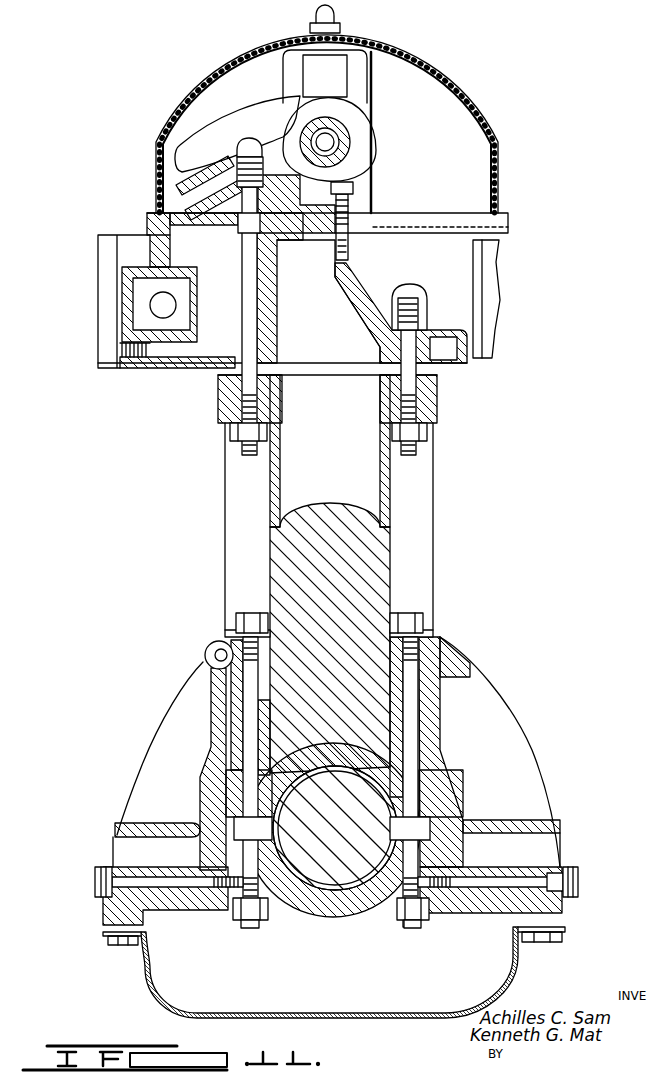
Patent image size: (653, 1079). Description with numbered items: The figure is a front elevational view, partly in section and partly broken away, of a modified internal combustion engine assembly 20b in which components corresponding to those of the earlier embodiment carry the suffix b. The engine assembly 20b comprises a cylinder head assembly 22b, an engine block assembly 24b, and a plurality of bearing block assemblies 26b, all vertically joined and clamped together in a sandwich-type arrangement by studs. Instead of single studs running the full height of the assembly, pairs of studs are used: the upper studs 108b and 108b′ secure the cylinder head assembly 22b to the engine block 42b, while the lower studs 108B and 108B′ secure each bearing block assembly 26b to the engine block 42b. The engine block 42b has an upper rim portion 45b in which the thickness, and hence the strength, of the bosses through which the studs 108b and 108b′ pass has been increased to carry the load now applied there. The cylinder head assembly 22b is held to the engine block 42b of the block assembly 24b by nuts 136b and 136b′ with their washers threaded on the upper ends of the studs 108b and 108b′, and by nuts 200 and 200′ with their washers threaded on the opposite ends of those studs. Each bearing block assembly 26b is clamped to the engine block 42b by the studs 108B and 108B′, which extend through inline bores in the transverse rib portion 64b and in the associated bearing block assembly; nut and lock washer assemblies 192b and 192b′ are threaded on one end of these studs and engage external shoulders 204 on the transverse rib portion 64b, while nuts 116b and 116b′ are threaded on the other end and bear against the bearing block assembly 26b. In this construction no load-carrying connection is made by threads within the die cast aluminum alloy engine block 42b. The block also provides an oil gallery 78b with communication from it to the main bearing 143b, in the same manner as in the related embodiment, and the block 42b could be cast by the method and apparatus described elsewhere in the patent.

The nut 136b is at (247, 143).
The nut 136b′ is at (423, 271).
The cylinder head assembly 22b is at (481, 291).
The upper rim portion 45b is at (217, 382).
The stud 108b is at (240, 392).
The stud 108b′ is at (440, 390).
The nut 200 is at (234, 441).
The nut 200′ is at (392, 441).
The internal combustion engine assembly 20b is at (438, 456).
The engine block assembly 24b is at (434, 490).
The engine block 42b is at (271, 550).
The nut and lock washer assembly 192b is at (236, 630).
The nut and lock washer assembly 192b′ is at (428, 622).
The external shoulders 204 is at (232, 640).
The transverse rib portion 64b is at (430, 648).
The oil gallery 78b is at (210, 650).
The stud 108B is at (243, 680).
The stud 108B′ is at (416, 690).
The nut 116b is at (227, 910).
The nut 116b′ is at (430, 919).
The main bearing 143b is at (312, 876).
The bearing block assembly 26b is at (357, 927).